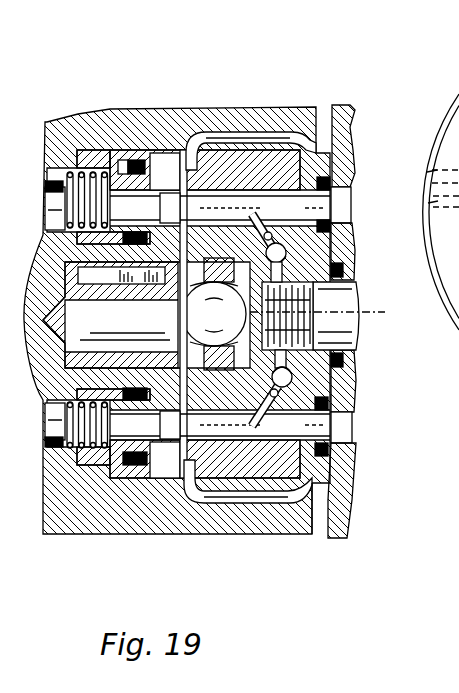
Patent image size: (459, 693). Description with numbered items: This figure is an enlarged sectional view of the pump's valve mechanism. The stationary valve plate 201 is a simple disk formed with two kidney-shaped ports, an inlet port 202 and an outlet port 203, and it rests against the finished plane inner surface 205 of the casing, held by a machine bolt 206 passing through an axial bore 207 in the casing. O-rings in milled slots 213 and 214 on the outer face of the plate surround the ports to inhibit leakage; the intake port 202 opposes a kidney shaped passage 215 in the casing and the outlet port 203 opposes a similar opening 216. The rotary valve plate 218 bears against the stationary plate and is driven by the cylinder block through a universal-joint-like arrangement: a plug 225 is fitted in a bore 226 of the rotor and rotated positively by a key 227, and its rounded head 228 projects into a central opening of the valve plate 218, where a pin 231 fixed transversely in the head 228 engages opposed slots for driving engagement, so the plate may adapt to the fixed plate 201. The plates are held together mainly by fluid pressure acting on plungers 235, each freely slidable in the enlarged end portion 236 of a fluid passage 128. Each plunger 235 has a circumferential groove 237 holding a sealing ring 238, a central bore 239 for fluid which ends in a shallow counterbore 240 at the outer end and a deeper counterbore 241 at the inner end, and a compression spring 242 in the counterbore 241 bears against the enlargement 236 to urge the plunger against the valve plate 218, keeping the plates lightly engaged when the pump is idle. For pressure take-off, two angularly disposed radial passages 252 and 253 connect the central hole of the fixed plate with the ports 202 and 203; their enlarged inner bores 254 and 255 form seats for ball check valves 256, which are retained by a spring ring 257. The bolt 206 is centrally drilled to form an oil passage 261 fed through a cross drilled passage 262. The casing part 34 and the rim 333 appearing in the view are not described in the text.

The housing 34 is at (97, 112).
The fluid passage 128 is at (50, 450).
The stationary valve plate 201 is at (303, 534).
The inlet port 202 is at (220, 208).
The outlet port 203 is at (220, 425).
The inner surface 205 is at (340, 158).
The machine bolt 206 is at (360, 304).
The axial bore 207 is at (325, 350).
The milled slot 213 is at (352, 478).
The milled slot 214 is at (322, 182).
The kidney shaped passage 215 is at (342, 205).
The opening 216 is at (345, 430).
The rotary valve plate 218 is at (215, 534).
The plug 225 is at (110, 315).
The bore 226 is at (32, 380).
The key 227 is at (121, 276).
The rounded head 228 is at (214, 314).
The pin 231 is at (178, 534).
The plunger 235 is at (163, 160).
The enlarged end portion 236 is at (116, 150).
The circumferential groove 237 is at (120, 168).
The sealing ring 238 is at (143, 160).
The central bore 239 is at (188, 158).
The shallow counterbore 240 is at (237, 152).
The deeper counterbore 241 is at (64, 188).
The compression spring 242 is at (47, 190).
The radial passage 252 is at (272, 238).
The radial passage 253 is at (290, 393).
The enlarged inner bore 254 is at (287, 253).
The enlarged inner bore 255 is at (292, 377).
The ball check valve 256 is at (284, 264).
The spring ring 257 is at (325, 288).
The oil passage 261 is at (300, 312).
The cross drilled passage 262 is at (318, 323).
The wheel rim 333 is at (458, 85).